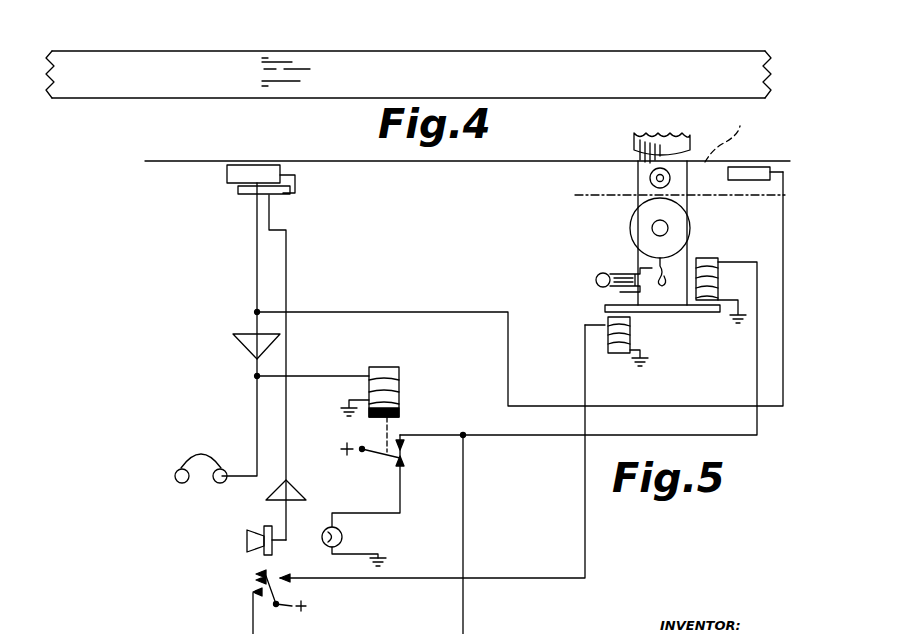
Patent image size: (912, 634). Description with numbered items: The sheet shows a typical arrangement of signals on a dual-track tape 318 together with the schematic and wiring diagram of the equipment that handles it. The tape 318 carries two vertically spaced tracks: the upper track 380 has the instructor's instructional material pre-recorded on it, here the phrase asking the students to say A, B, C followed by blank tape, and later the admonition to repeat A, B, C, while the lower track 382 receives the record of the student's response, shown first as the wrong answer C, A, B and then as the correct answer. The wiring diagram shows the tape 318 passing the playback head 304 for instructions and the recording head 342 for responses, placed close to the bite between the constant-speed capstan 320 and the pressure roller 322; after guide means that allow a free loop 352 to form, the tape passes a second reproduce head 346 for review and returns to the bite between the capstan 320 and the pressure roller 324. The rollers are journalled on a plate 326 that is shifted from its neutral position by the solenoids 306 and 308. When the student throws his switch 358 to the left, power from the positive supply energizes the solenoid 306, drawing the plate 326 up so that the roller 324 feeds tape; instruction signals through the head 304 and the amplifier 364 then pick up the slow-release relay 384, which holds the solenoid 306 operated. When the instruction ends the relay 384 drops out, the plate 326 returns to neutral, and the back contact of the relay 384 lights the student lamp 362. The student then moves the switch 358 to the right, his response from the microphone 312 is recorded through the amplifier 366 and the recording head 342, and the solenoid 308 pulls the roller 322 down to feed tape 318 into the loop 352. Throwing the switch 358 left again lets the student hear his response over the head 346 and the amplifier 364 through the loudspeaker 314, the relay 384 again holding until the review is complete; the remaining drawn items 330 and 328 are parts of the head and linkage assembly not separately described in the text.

In FIG. 4, the tape 318 is at (648, 52).
In FIG. 5, the tape 318 is at (362, 164).
In FIG. 4, the upper track 380 is at (278, 62).
In FIG. 4, the lower track 382 is at (260, 85).
In FIG. 5, the playback head 304 is at (228, 172).
In FIG. 5, the recording head 342 is at (292, 192).
In FIG. 5, the free loop 352 is at (738, 128).
In FIG. 5, the pressure roller 322 is at (636, 147).
In FIG. 5, the capstan 320 is at (648, 178).
In FIG. 5, the pressure roller 324 is at (636, 226).
In FIG. 5, the second reproduce head 346 is at (750, 170).
In FIG. 5, the erase head 330 is at (618, 272).
In FIG. 5, the pivot hook 328 is at (670, 284).
In FIG. 5, the plate 326 is at (684, 310).
In FIG. 5, the solenoid 306 is at (704, 258).
In FIG. 5, the solenoid 308 is at (628, 330).
In FIG. 5, the amplifier 364 is at (248, 354).
In FIG. 5, the relay 384 is at (398, 392).
In FIG. 5, the handset / microphone 312 is at (210, 452).
In FIG. 5, the amplifier 366 is at (300, 492).
In FIG. 5, the loudspeaker 314 is at (246, 542).
In FIG. 5, the student lamp 362 is at (343, 538).
In FIG. 5, the switch 358 is at (290, 596).